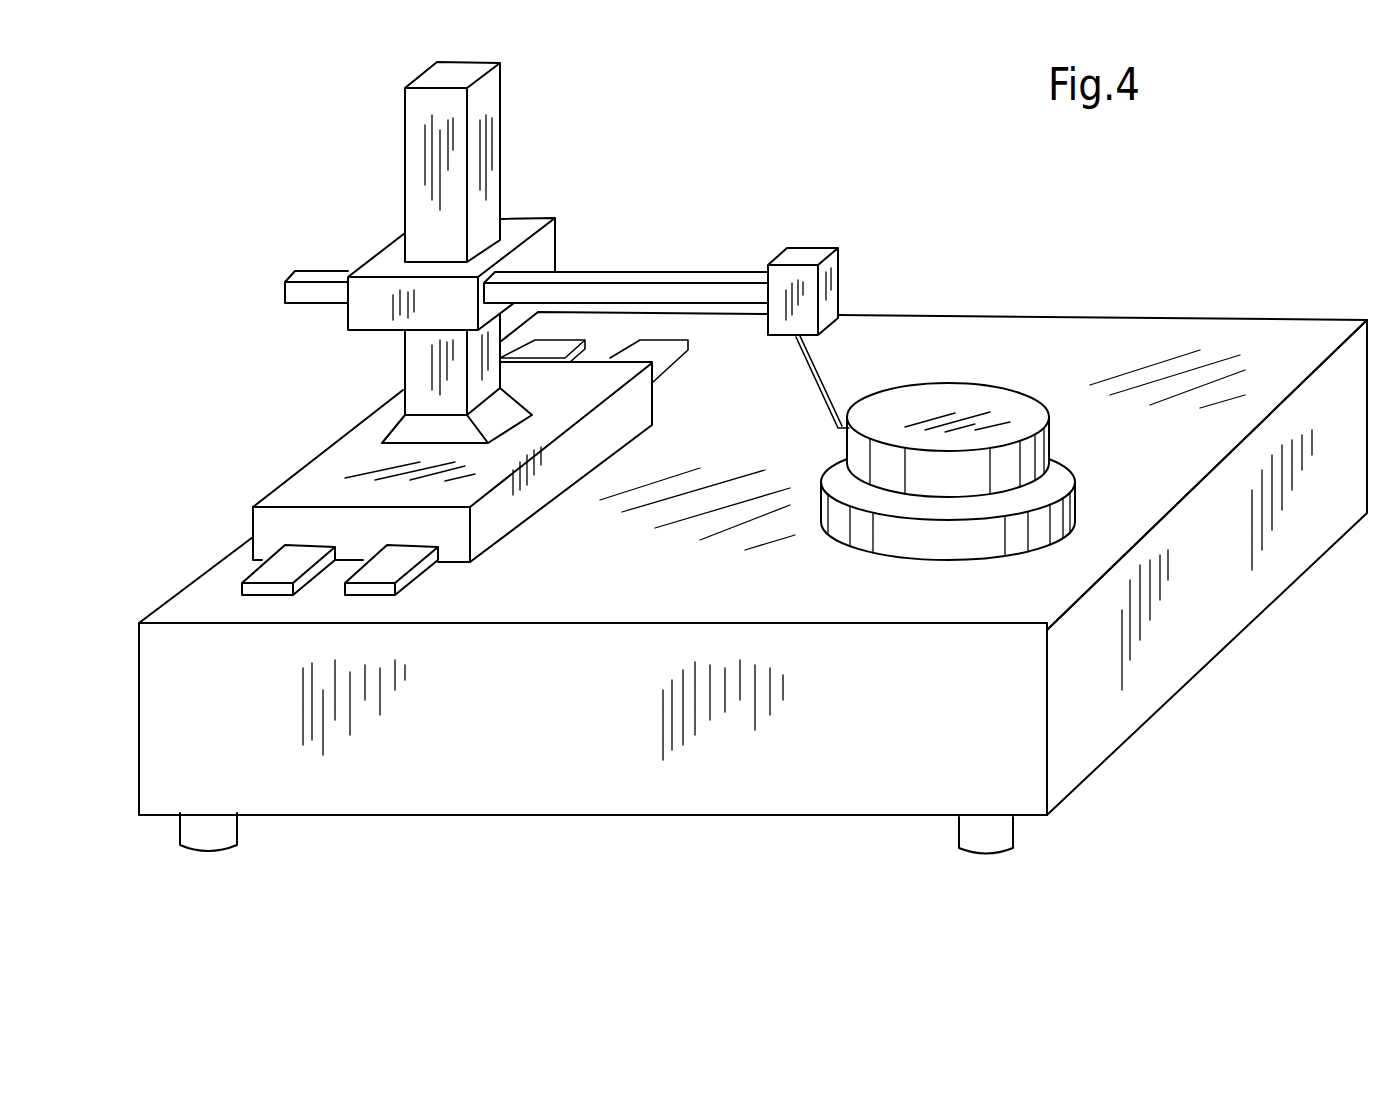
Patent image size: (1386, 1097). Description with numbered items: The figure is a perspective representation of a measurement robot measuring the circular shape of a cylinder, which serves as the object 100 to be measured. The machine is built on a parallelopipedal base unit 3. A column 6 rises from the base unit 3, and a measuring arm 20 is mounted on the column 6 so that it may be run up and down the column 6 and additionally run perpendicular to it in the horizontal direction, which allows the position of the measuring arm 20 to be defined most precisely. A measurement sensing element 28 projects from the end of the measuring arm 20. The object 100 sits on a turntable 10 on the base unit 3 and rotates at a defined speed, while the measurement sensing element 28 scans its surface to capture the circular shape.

The base unit 3 is at (1148, 343).
The column 6 is at (473, 72).
The measuring arm 20 is at (657, 293).
The measurement sensing element 28 is at (818, 368).
The object to be measured 100 is at (935, 398).
The turntable 10 is at (1060, 510).